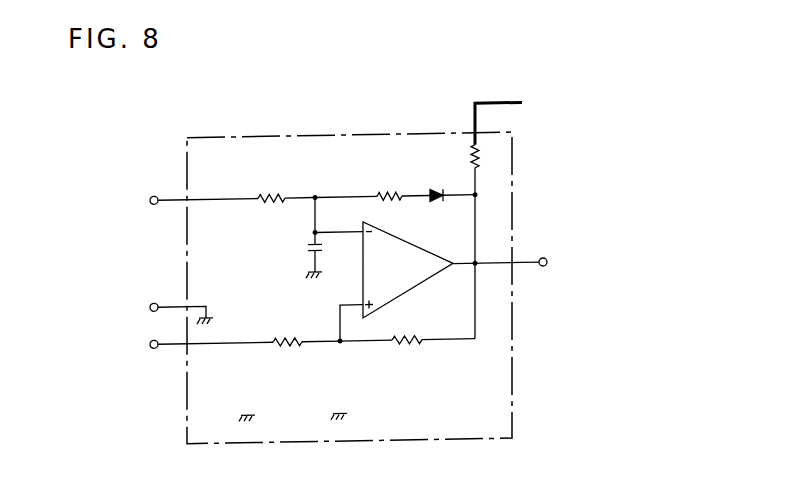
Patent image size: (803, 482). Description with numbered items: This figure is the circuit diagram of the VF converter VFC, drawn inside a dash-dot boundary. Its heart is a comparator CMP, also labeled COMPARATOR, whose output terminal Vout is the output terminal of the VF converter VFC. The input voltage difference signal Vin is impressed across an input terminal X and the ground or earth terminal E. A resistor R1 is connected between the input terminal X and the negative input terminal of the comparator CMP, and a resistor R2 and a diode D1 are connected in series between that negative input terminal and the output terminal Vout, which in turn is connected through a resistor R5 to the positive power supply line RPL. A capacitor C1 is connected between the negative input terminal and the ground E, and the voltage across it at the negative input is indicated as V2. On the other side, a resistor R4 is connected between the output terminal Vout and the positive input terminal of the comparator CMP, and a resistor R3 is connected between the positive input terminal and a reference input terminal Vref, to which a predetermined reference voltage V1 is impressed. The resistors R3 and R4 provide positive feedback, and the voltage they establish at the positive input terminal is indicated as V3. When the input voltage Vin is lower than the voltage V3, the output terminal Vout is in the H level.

The VF converter VFC is at (303, 141).
The positive power supply line RPL is at (495, 112).
The resistor R1 is at (286, 186).
The resistor R2 is at (372, 185).
The resistor R3 is at (306, 329).
The resistor R4 is at (407, 328).
The resistor R5 is at (487, 169).
The capacitor C1 is at (326, 237).
The diode D1 is at (452, 185).
The comparator CMP is at (387, 245).
The comparator COMPARATOR is at (433, 266).
The input terminal X is at (153, 193).
The earth terminal E is at (148, 311).
The input voltage difference signal Vin is at (148, 308).
The reference input terminal Vref is at (180, 343).
The output terminal Vout is at (569, 253).
The reference voltage V1 is at (248, 357).
The voltage V2 is at (307, 215).
The voltage V3 is at (340, 357).